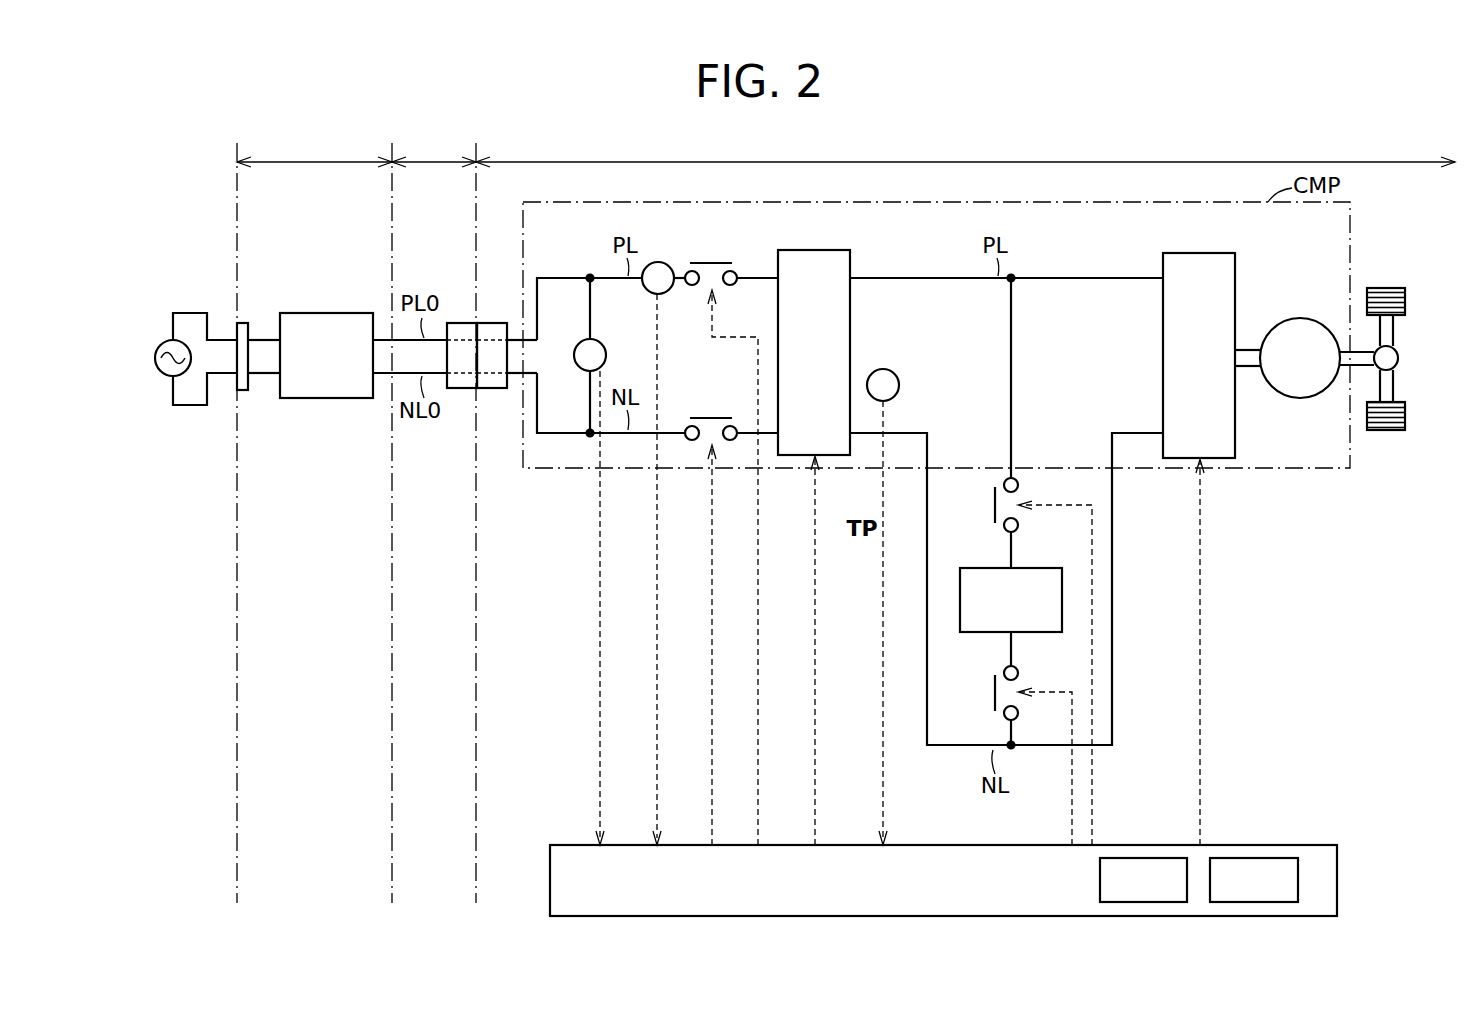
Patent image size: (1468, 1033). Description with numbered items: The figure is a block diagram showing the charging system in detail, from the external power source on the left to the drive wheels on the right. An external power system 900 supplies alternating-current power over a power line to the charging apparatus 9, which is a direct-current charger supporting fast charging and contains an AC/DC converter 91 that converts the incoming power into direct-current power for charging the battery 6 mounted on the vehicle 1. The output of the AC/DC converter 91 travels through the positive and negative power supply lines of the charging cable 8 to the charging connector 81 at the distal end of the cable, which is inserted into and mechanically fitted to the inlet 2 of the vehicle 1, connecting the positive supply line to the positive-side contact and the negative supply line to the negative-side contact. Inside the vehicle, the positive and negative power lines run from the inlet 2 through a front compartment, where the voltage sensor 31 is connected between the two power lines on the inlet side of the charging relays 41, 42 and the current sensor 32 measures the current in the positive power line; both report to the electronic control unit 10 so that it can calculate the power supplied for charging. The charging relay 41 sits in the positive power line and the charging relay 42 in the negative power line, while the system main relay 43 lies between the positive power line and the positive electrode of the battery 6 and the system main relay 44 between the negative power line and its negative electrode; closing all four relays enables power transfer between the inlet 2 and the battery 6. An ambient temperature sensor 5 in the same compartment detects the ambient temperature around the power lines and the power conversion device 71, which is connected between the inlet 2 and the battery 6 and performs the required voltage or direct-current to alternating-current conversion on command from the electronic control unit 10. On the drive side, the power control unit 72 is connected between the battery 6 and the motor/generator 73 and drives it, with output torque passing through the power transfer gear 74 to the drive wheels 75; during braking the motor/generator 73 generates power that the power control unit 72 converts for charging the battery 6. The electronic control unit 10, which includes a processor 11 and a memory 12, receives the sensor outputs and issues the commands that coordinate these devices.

The vehicle 1 is at (965, 150).
The inlet 2 is at (493, 322).
The ambient temperature sensor 5 is at (883, 369).
The battery 6 is at (1040, 568).
The charging cable 8 is at (434, 150).
The charging apparatus 9 is at (314, 150).
The electronic control unit 10 is at (943, 857).
The processor 11 is at (1144, 858).
The memory 12 is at (1255, 858).
The voltage sensor 31 is at (581, 345).
The current sensor 32 is at (658, 262).
The charging relay 41 is at (712, 260).
The charging relay 42 is at (712, 416).
The system main relay 43 is at (987, 503).
The system main relay 44 is at (987, 691).
The power conversion device 71 is at (840, 250).
The power control unit 72 is at (1222, 253).
The motor/generator 73 is at (1300, 318).
The power transfer gear 74 is at (1400, 357).
The drive wheels 75 is at (1390, 288).
The charging connector 81 is at (462, 322).
The AC/DC converter 91 is at (327, 313).
The external power system 900 is at (155, 358).